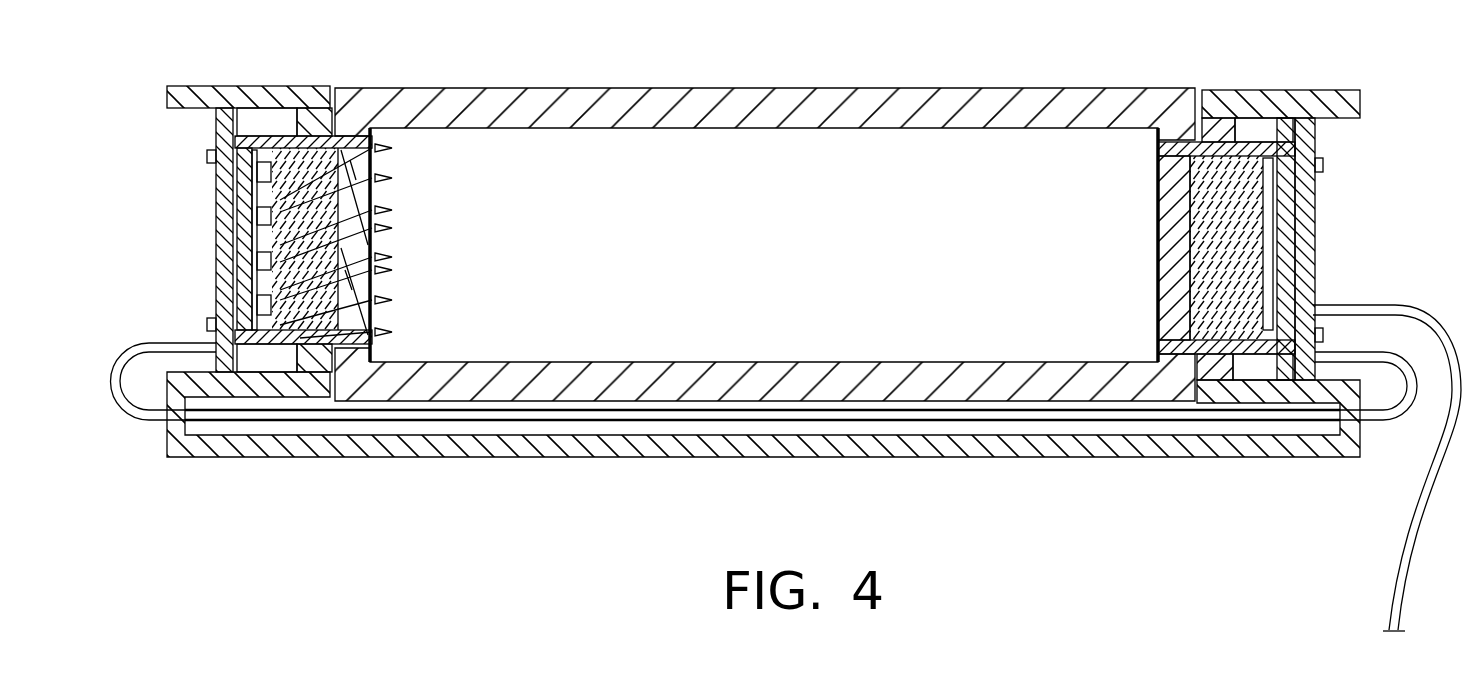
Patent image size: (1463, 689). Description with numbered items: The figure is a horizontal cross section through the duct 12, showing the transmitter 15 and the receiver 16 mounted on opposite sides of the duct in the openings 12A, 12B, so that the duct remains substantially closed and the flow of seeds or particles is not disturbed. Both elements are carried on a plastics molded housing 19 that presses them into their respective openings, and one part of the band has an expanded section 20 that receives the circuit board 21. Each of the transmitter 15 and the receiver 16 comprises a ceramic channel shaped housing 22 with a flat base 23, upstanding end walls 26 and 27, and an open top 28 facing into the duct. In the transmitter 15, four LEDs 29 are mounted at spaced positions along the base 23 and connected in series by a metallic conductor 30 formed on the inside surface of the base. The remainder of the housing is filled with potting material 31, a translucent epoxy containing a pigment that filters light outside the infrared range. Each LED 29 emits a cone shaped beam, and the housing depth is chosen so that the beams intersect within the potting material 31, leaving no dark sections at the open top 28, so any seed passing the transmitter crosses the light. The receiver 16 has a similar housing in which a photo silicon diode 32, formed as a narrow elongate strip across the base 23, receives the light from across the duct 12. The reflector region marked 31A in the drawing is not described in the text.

The duct 12 is at (777, 86).
The opening 12A is at (373, 158).
The opening 12B is at (1165, 343).
The transmitter 15 is at (276, 126).
The receiver 16 is at (1251, 140).
The plastics molded housing 19 is at (177, 84).
The expanded section 20 is at (1348, 90).
The circuit board 21 is at (1316, 209).
The channel shaped housing 22 is at (1300, 230).
The flat base 23 is at (243, 172).
The upstanding end wall 26 is at (253, 120).
The upstanding end wall 27 is at (218, 360).
The open top 28 is at (378, 240).
The LEDs 29 is at (256, 268).
The metallic conductor 30 is at (253, 206).
The potting material 31 is at (372, 196).
The reflector 31A is at (372, 290).
The photo silicon diode 32 is at (1262, 270).